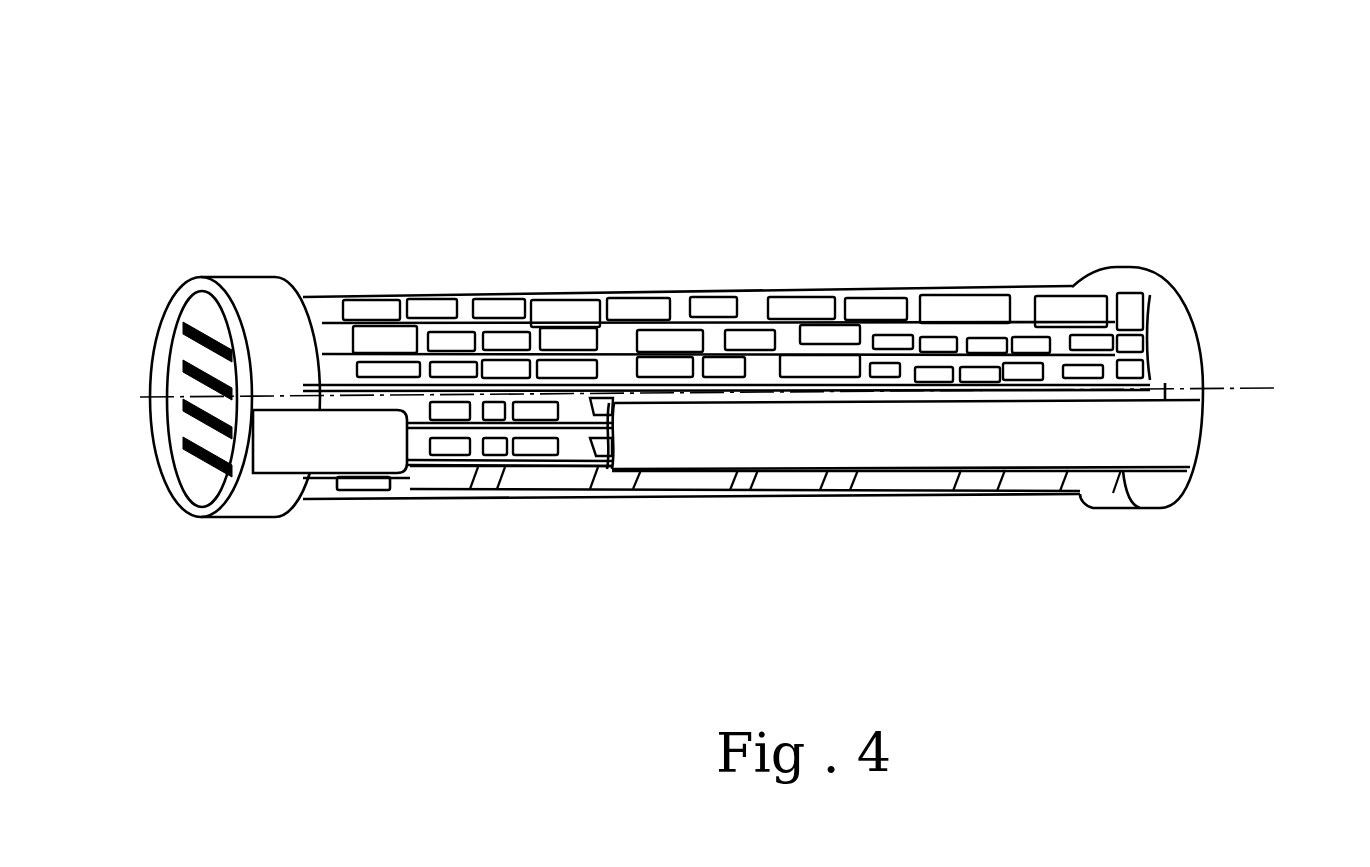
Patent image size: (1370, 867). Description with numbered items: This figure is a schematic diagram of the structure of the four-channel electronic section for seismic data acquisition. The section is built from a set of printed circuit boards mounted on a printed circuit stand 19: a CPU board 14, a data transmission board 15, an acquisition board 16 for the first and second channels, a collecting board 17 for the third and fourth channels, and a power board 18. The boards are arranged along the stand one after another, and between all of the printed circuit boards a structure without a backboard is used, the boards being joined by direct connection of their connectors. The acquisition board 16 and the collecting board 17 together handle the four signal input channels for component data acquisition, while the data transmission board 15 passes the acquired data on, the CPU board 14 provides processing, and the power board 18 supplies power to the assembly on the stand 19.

The CPU board 14 is at (380, 338).
The data transmission board 15 is at (508, 370).
The acquisition board for channel 1–2 16 is at (568, 408).
The collecting board for channel 3–4 17 is at (592, 448).
The power board 18 is at (693, 483).
The printed circuit stand 19 is at (1190, 357).